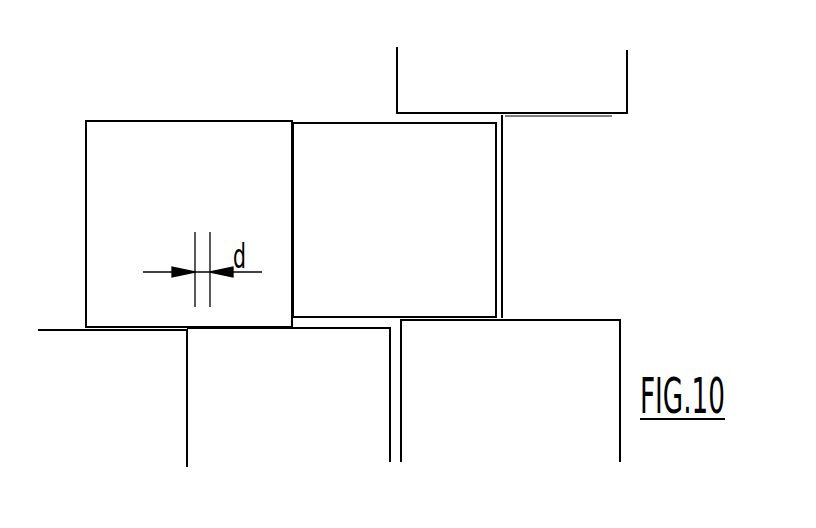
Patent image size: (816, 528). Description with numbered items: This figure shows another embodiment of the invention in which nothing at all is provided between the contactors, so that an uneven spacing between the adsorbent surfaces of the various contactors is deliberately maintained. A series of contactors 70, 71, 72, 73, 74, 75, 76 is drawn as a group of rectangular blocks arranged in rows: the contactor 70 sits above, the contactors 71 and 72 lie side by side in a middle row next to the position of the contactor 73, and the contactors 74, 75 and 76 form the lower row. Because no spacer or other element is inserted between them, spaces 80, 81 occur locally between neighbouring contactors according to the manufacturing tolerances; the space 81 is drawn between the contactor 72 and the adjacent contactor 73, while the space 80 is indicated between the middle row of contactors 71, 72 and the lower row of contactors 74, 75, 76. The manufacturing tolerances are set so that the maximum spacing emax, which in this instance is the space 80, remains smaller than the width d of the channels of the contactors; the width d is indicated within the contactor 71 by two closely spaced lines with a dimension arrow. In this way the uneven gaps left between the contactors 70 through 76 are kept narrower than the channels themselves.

The contactor 70 is at (557, 75).
The contactor 71 is at (128, 232).
The contactor 72 is at (355, 232).
The contactor 73 is at (553, 233).
The contactor 74 is at (72, 416).
The contactor 75 is at (258, 418).
The contactor 76 is at (484, 417).
The space 80 is at (335, 318).
The space 81 is at (503, 189).